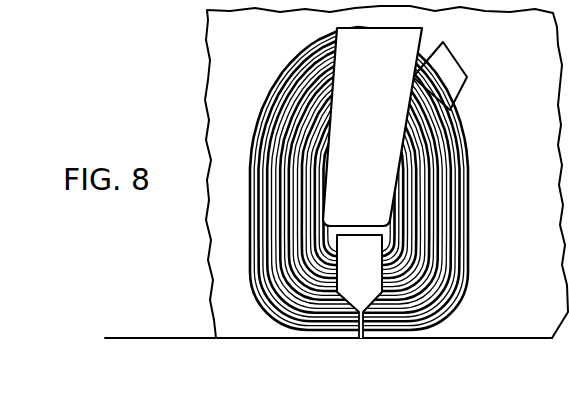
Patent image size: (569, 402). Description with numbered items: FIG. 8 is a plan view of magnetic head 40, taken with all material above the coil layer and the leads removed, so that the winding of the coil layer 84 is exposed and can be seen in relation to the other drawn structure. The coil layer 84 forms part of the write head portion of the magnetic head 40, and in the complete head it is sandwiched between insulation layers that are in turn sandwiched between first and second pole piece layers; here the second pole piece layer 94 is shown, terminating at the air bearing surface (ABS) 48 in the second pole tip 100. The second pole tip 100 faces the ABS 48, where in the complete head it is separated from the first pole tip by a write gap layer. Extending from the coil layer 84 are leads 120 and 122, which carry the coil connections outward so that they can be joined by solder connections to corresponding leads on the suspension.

The magnetic head 40 is at (482, 150).
The air bearing surface (ABS) 48 is at (157, 338).
The coil layer 84 is at (452, 236).
The second pole piece layer 94 is at (373, 275).
The second pole tip 100 is at (362, 339).
The lead 120 is at (377, 127).
The lead 122 is at (456, 57).